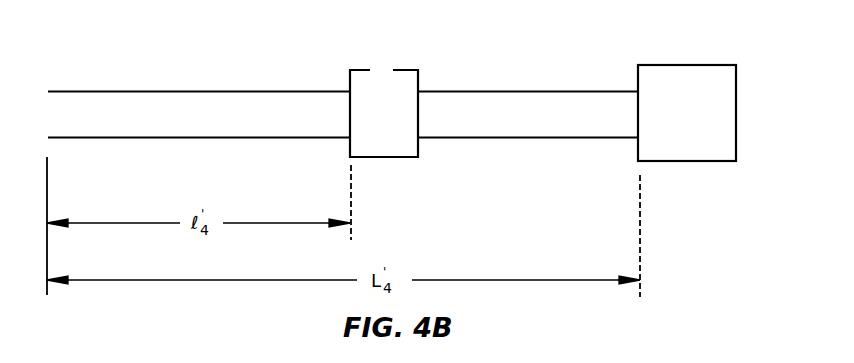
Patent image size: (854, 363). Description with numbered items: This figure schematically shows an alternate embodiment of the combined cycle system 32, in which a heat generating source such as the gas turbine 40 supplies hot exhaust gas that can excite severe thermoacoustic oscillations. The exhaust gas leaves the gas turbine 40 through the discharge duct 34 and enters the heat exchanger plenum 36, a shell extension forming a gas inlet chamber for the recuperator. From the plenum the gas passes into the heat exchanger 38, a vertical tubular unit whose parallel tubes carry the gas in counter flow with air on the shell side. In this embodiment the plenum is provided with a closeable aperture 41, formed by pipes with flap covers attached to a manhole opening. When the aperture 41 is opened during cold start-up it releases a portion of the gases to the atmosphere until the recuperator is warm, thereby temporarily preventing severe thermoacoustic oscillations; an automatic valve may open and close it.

The combined cycle system 32 is at (356, 52).
The discharge duct 34 is at (522, 138).
The heat exchanger plenum 36 is at (397, 157).
The heat exchanger 38 is at (103, 138).
The gas turbine 40 is at (712, 161).
The closeable aperture 41 is at (385, 68).